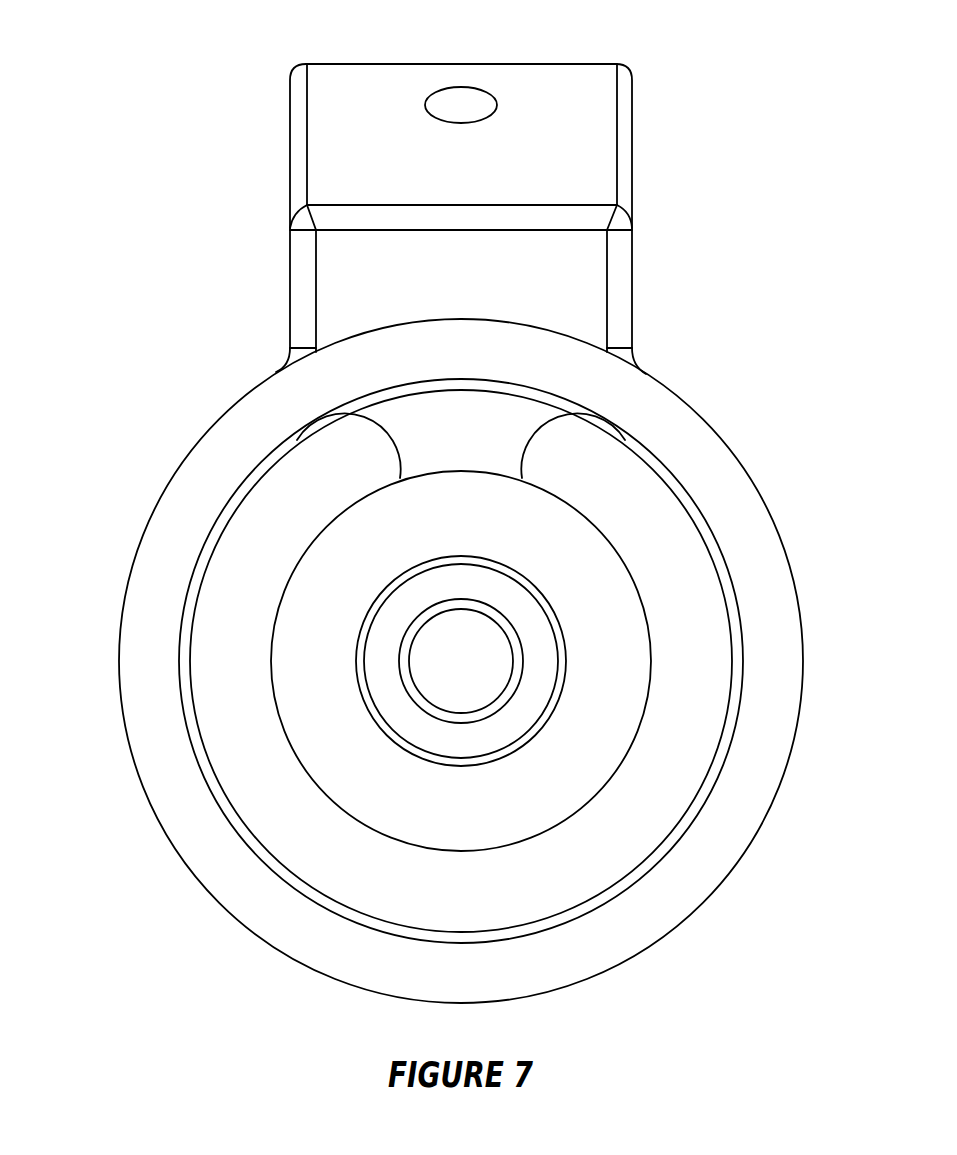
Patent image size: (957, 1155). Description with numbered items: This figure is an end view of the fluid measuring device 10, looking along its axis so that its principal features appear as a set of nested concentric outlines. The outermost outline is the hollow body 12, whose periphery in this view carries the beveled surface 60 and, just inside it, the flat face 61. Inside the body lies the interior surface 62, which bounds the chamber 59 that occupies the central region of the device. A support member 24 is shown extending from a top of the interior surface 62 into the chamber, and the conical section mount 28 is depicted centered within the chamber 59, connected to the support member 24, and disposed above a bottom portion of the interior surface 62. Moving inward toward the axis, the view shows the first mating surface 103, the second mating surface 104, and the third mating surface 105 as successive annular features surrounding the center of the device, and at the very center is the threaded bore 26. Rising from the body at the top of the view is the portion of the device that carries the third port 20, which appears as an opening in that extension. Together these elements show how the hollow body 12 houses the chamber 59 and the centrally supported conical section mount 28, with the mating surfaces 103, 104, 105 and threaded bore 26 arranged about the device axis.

The fluid measuring device 10 is at (118, 216).
The hollow body 12 is at (117, 655).
The third port 20 is at (462, 77).
The support member 24 is at (533, 447).
The threaded bore 26 is at (460, 716).
The conical section mount 28 is at (650, 773).
The chamber 59 is at (722, 622).
The beveled surface 60 is at (700, 885).
The flat face 61 is at (263, 857).
The interior surface 62 is at (210, 767).
The first mating surface 103 is at (578, 552).
The second mating surface 104 is at (399, 580).
The third mating surface 105 is at (540, 632).